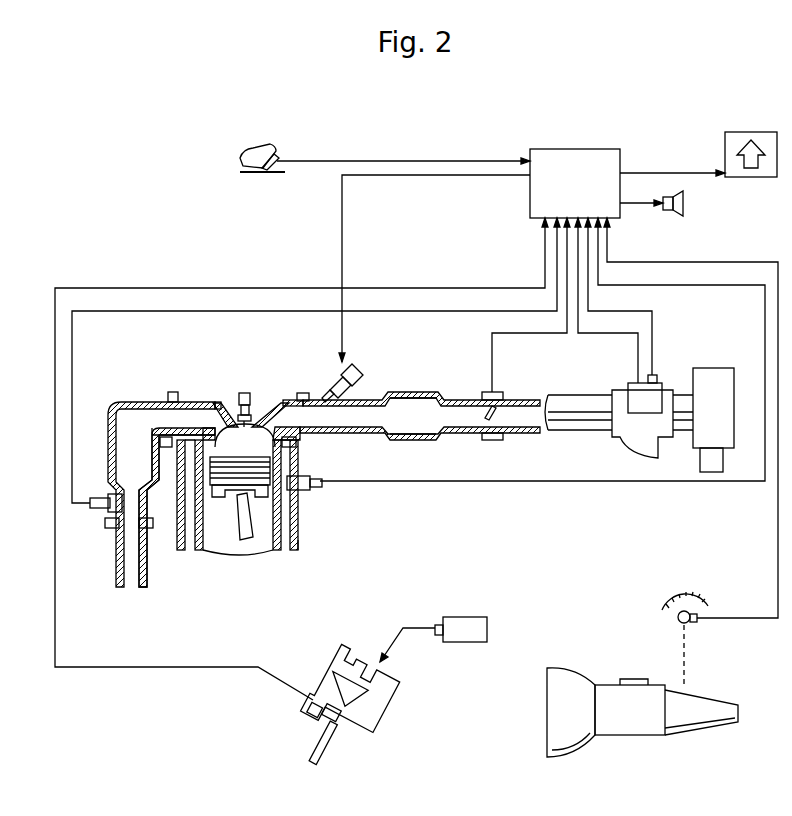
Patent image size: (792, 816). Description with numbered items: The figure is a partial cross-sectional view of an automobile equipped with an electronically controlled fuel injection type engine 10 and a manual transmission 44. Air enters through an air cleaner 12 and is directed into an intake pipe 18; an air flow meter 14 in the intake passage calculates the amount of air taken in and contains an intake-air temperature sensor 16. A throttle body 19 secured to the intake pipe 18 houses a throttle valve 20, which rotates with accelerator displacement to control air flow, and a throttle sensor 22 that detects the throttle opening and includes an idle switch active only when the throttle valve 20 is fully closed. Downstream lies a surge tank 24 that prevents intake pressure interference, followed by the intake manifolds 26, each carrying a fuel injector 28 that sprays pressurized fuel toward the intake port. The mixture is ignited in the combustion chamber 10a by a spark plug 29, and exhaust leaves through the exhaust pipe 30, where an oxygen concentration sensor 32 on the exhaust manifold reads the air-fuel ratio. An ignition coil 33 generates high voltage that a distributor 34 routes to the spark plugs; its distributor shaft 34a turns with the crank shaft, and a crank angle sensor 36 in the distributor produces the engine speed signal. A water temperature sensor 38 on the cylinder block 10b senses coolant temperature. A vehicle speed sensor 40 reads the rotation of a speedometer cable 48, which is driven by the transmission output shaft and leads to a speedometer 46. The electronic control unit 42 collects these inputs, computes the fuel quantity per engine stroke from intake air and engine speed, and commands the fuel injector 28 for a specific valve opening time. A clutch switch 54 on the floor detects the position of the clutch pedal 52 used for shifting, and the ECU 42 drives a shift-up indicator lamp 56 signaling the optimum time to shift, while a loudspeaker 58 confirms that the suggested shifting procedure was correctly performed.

The engine 10 is at (208, 398).
The combustion chamber 10a is at (260, 454).
The cylinder block 10b is at (300, 547).
The air cleaner 12 is at (712, 368).
The air flow meter 14 is at (635, 450).
The intake-air temperature sensor 16 is at (657, 375).
The intake pipe 18 is at (540, 430).
The throttle body 19 is at (495, 440).
The throttle valve 20 is at (488, 412).
The throttle sensor 22 is at (505, 392).
The surge tank 24 is at (440, 438).
The intake manifold 26 is at (357, 434).
The fuel injector 28 is at (357, 372).
The spark plug 29 is at (247, 394).
The exhaust pipe 30 is at (120, 402).
The oxygen concentration sensor 32 is at (96, 512).
The ignition coil 33 is at (465, 617).
The distributor 34 is at (400, 698).
The distributor shaft 34a is at (345, 752).
The crank angle sensor 36 is at (307, 716).
The water temperature sensor 38 is at (318, 492).
The vehicle speed sensor 40 is at (696, 624).
The electronic control unit 42 is at (573, 149).
The transmission 44 is at (648, 737).
The speedometer 46 is at (664, 607).
The speedometer cable 48 is at (680, 642).
The clutch pedal 52 is at (275, 150).
The clutch switch 54 is at (282, 166).
The shift-up indicator lamp 56 is at (748, 132).
The loudspeaker 58 is at (670, 214).